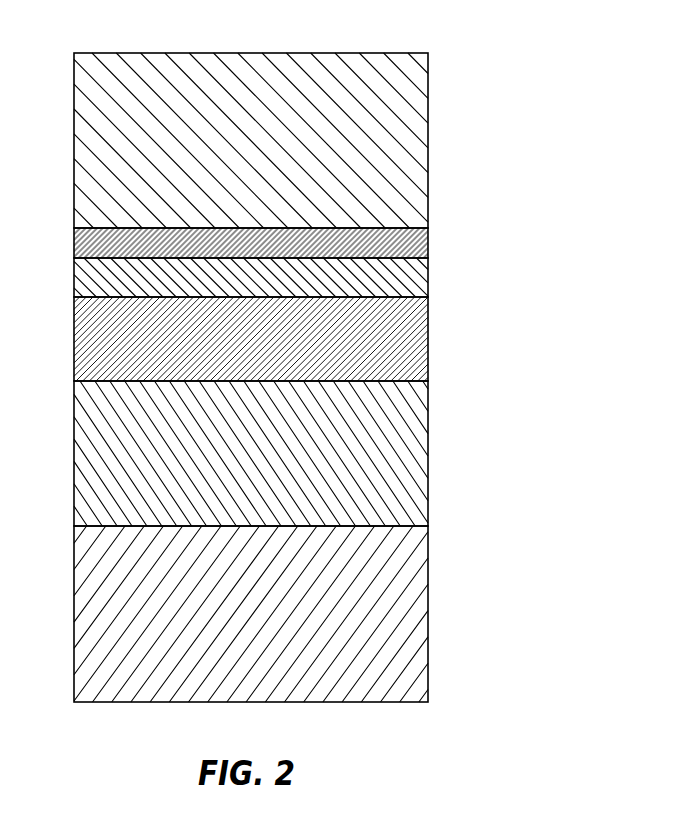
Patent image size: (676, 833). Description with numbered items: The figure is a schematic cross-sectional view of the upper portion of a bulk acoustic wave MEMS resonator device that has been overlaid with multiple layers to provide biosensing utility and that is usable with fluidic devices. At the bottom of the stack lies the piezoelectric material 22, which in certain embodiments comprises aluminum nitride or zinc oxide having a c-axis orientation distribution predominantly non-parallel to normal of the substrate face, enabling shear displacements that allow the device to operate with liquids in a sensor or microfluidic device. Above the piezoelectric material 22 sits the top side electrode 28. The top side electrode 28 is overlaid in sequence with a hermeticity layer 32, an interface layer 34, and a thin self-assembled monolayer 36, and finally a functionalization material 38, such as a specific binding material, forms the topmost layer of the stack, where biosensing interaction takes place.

The piezoelectric material 22 is at (428, 604).
The top side electrode 28 is at (428, 458).
The hermeticity layer 32 is at (428, 358).
The interface layer 34 is at (428, 284).
The self-assembled monolayer 36 is at (428, 241).
The functionalization material 38 is at (428, 127).